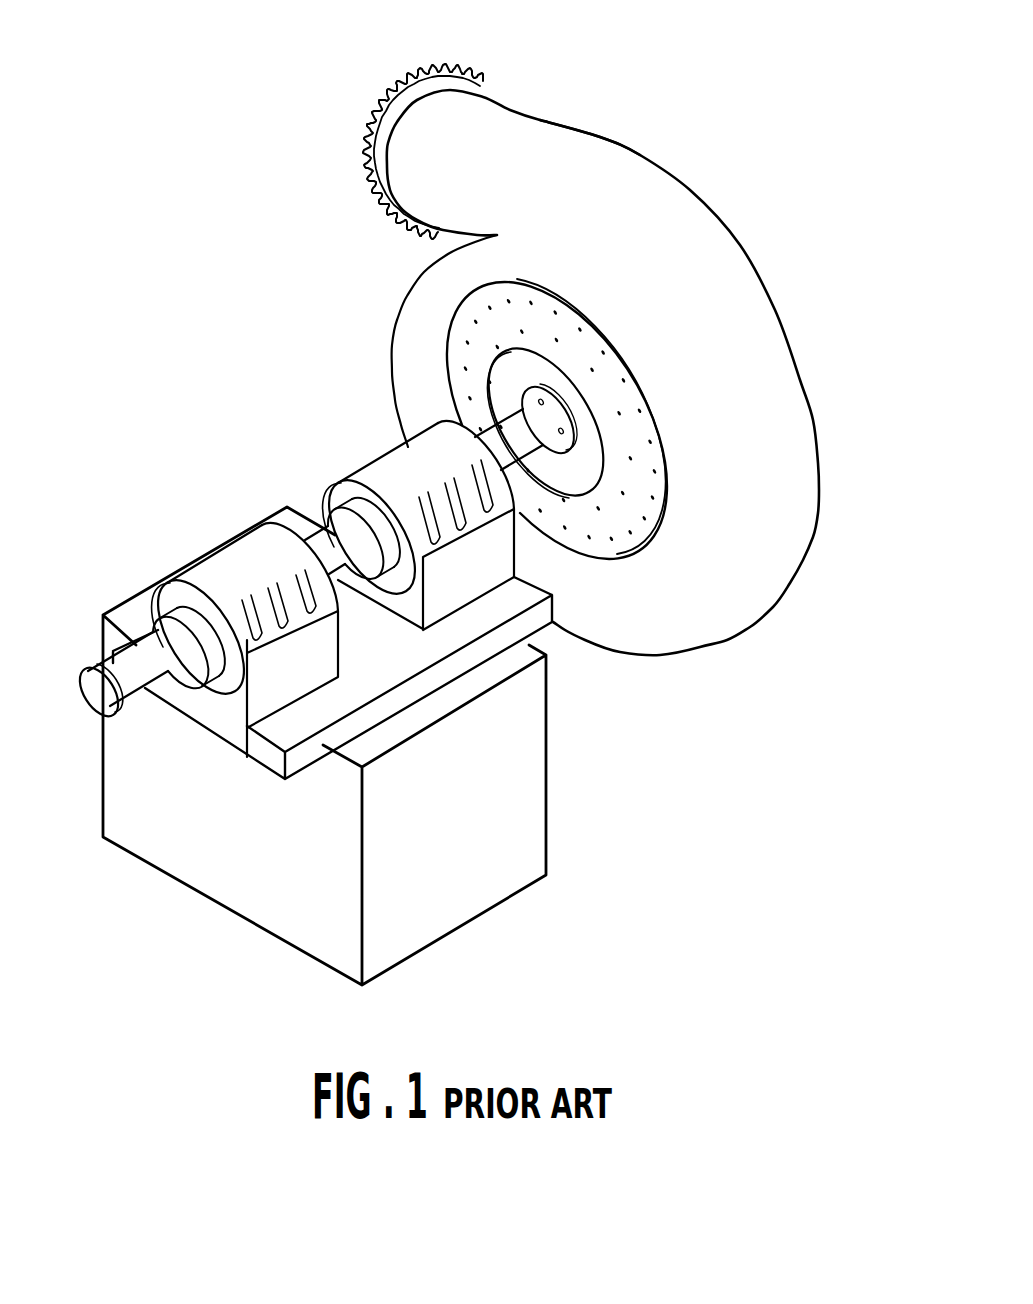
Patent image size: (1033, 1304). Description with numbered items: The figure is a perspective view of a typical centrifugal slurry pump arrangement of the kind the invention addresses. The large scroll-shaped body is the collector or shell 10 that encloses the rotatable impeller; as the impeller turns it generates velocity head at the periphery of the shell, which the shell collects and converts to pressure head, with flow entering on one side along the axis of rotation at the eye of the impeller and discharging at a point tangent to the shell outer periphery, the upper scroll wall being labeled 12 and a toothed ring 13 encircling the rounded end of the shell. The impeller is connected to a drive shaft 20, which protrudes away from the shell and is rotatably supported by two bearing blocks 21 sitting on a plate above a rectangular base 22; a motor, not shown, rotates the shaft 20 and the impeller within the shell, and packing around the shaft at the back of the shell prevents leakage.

The blower housing 10 is at (710, 253).
The housing scroll top wall 12 is at (573, 147).
The ring gear 13 is at (363, 160).
The drive shaft 20 is at (328, 520).
The bearing blocks 21 is at (380, 463).
The base block 22 is at (525, 805).